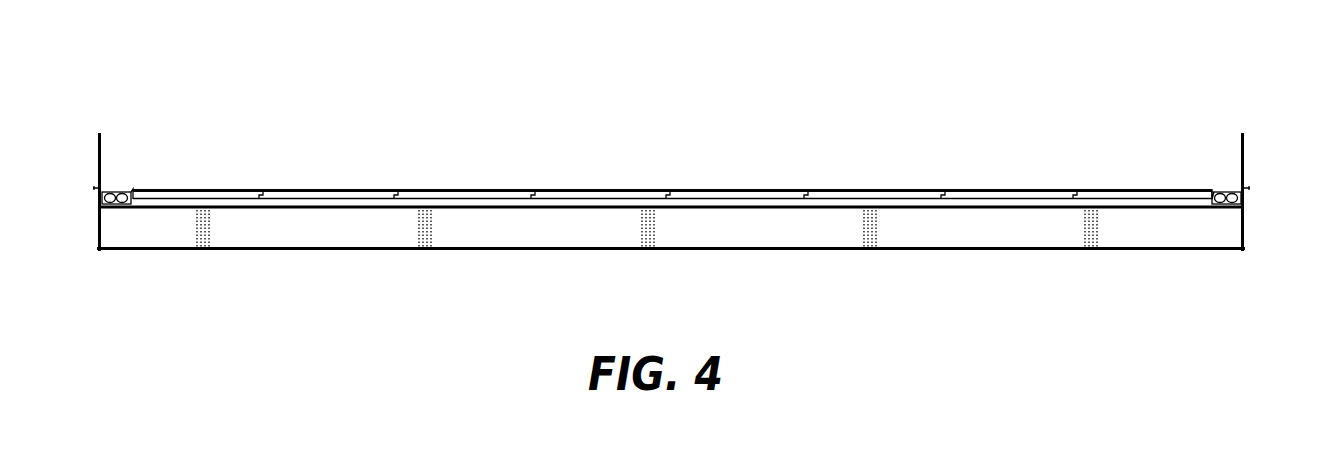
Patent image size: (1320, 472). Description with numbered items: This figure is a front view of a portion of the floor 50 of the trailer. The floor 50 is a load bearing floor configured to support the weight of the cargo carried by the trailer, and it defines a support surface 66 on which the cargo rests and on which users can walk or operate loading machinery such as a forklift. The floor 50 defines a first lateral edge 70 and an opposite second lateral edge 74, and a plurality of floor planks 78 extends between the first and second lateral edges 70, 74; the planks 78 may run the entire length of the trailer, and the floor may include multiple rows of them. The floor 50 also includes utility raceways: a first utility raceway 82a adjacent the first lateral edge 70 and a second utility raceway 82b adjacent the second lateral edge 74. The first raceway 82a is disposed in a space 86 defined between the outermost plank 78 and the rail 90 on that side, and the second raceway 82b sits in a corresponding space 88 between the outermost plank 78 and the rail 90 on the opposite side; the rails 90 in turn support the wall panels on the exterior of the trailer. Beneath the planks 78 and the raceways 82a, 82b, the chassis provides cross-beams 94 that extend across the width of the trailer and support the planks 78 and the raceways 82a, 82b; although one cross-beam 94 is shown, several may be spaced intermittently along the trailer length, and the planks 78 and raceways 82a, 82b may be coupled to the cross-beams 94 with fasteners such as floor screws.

The floor 50 is at (550, 111).
The support surface 66 is at (620, 185).
The first lateral edge 70 is at (68, 114).
The second lateral edge 74 is at (1262, 114).
The floor planks 78 is at (297, 190).
The first utility raceway 82a is at (117, 192).
The second utility raceway 82b is at (1226, 192).
The space 86 is at (139, 167).
The right sheet end joint 88 is at (1202, 172).
The rails 90 is at (98, 151).
The cross-beams 94 is at (232, 238).